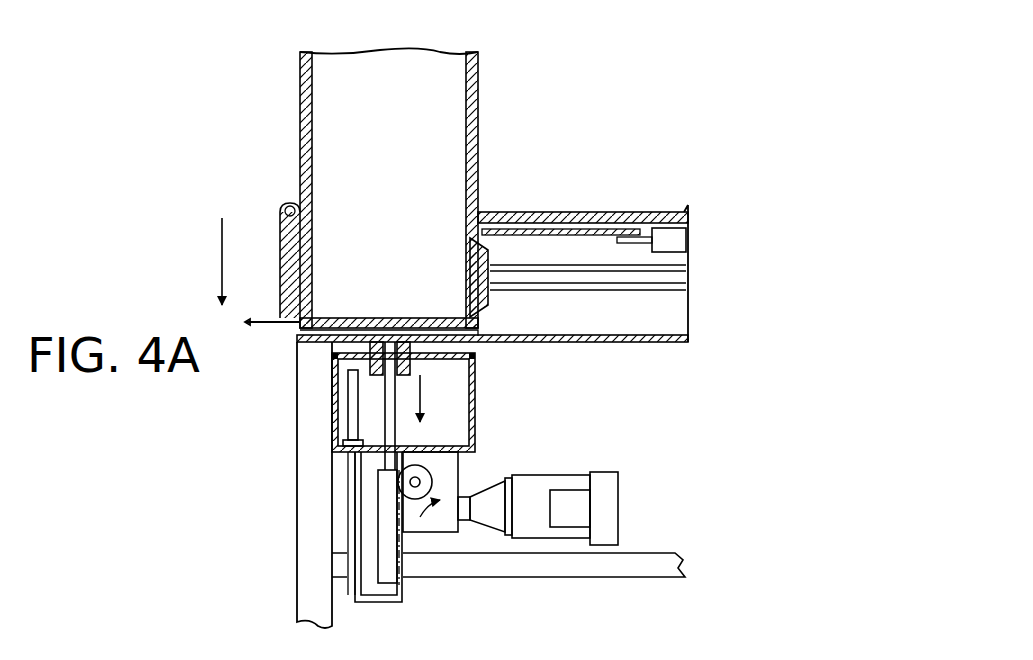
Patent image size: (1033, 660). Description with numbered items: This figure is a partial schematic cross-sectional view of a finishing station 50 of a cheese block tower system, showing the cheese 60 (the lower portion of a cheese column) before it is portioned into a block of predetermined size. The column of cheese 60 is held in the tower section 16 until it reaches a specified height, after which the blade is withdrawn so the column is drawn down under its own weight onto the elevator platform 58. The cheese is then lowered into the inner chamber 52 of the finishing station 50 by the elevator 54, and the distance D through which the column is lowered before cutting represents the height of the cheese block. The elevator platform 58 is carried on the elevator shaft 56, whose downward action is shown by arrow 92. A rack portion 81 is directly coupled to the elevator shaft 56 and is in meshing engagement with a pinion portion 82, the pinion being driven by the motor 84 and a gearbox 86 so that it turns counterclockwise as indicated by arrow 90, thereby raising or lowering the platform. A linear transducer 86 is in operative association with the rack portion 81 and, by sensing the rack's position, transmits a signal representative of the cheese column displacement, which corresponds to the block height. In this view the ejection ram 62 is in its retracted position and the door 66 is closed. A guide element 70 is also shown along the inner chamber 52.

The tower section 16 is at (375, 62).
The cheese 60 is at (389, 185).
The door 66 is at (286, 244).
The distance D is at (222, 262).
The inner chamber 52 is at (617, 326).
The guide rail 70 is at (548, 238).
The ejection ram 62 is at (488, 302).
The finishing station 50 is at (514, 358).
The elevator platform 58 is at (312, 340).
The elevator 54 is at (416, 592).
The elevator shaft 56 is at (392, 500).
The linear transducer 86 is at (352, 393).
The arrow 92 is at (421, 393).
The arrow 90 is at (414, 520).
The motor 84 is at (528, 492).
The rack portion 81 is at (392, 582).
The pinion portion 82 is at (407, 492).